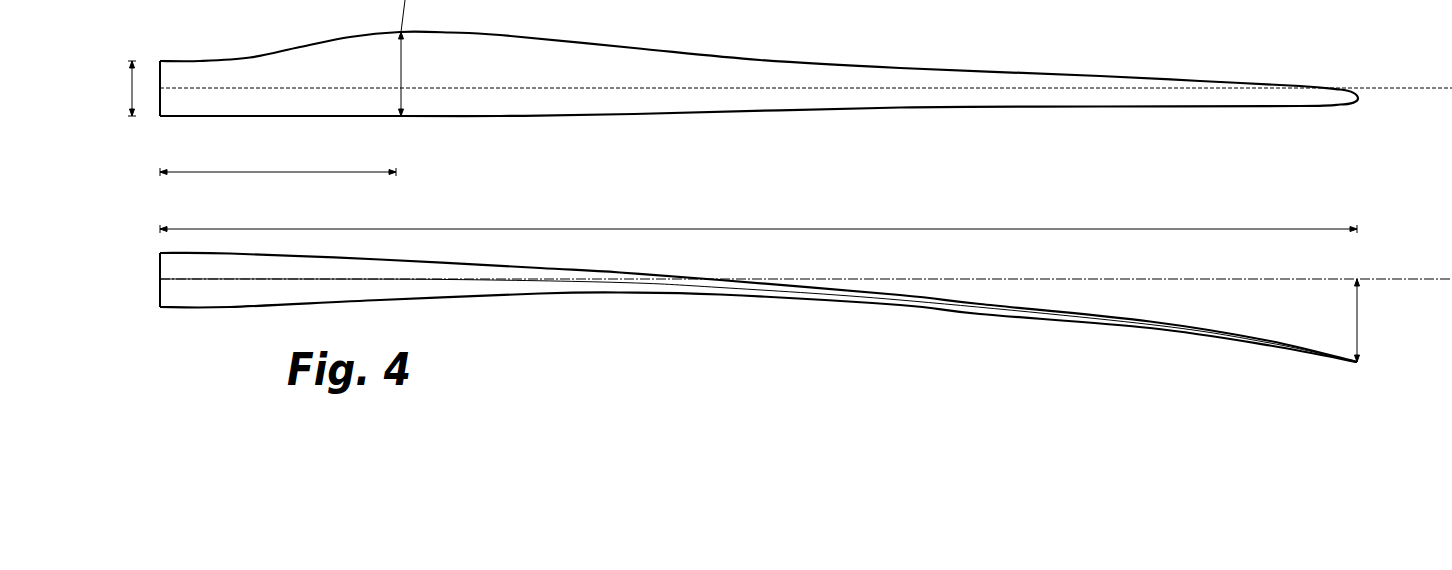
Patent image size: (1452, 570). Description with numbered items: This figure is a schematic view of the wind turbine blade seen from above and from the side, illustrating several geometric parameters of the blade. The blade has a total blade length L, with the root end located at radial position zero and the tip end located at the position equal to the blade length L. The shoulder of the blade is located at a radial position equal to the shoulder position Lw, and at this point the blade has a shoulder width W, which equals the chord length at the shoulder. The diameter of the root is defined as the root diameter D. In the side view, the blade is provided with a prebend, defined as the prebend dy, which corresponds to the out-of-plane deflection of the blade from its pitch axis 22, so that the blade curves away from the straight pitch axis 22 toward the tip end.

The pitch axis 22 is at (635, 88).
The root diameter D is at (122, 88).
The shoulder width W is at (418, 74).
The shoulder position Lw is at (278, 159).
The total blade length L is at (758, 216).
The prebend dy is at (1374, 320).